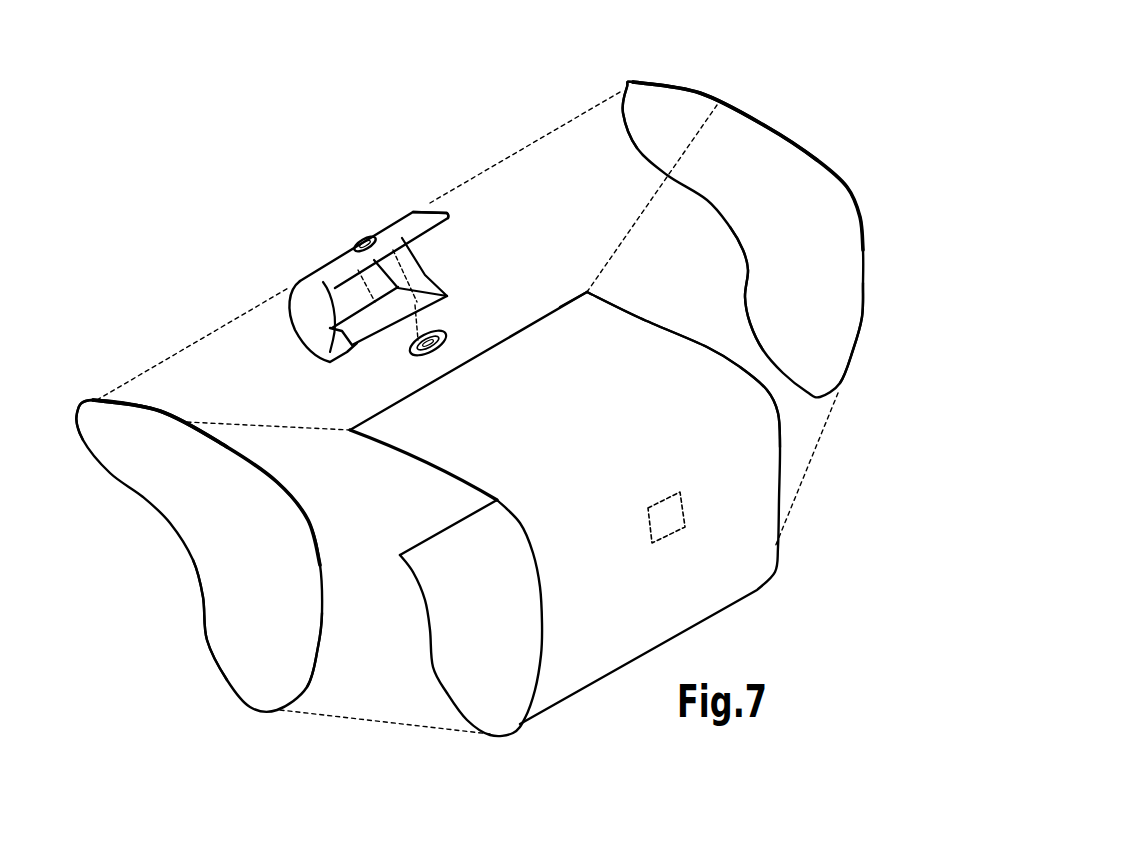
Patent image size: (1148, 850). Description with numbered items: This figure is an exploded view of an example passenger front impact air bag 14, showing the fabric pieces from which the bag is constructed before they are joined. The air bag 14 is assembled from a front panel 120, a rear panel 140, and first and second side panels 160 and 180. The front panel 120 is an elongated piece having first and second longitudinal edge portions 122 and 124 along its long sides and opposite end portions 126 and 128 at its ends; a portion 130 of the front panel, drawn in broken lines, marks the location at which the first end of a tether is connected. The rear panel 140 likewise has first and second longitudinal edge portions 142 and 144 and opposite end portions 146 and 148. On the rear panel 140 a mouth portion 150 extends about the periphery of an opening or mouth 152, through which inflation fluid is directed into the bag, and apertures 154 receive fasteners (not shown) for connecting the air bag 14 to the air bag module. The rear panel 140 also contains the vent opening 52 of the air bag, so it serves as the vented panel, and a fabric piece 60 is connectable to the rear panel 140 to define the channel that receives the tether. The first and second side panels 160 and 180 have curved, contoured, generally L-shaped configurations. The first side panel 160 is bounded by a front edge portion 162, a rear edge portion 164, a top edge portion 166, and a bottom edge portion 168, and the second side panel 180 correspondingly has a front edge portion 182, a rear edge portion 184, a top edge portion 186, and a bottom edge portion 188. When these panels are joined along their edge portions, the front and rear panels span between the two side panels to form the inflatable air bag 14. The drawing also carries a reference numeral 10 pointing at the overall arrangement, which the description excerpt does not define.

The bracket assembly 10 is at (257, 157).
The air bag 14 is at (233, 208).
The vent opening 52 is at (363, 238).
The fabric piece 60 is at (453, 328).
The front panel 120 is at (717, 557).
The first longitudinal edge portion 122 is at (542, 603).
The second longitudinal edge portion 124 is at (782, 494).
The end portion 126 is at (555, 305).
The end portion 128 is at (465, 515).
The portion of the front panel 130 is at (660, 502).
The rear panel 140 is at (412, 212).
The first longitudinal edge portion 142 is at (290, 307).
The second longitudinal edge portion 144 is at (430, 275).
The end portion 146 is at (442, 220).
The end portion 148 is at (368, 350).
The mouth portion 150 is at (337, 327).
The mouth 152 is at (347, 342).
The apertures 154 is at (360, 272).
The first side panel 160 is at (203, 517).
The front edge portion 162 is at (320, 636).
The rear edge portion 164 is at (82, 420).
The top edge portion 166 is at (157, 412).
The bottom edge portion 168 is at (193, 563).
The second side panel 180 is at (780, 170).
The front edge portion 182 is at (863, 322).
The rear edge portion 184 is at (620, 112).
The top edge portion 186 is at (743, 110).
The bottom edge portion 188 is at (742, 248).